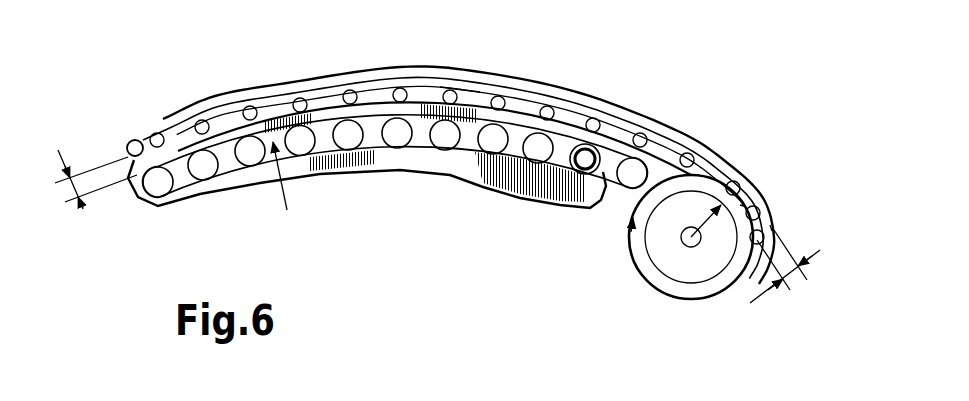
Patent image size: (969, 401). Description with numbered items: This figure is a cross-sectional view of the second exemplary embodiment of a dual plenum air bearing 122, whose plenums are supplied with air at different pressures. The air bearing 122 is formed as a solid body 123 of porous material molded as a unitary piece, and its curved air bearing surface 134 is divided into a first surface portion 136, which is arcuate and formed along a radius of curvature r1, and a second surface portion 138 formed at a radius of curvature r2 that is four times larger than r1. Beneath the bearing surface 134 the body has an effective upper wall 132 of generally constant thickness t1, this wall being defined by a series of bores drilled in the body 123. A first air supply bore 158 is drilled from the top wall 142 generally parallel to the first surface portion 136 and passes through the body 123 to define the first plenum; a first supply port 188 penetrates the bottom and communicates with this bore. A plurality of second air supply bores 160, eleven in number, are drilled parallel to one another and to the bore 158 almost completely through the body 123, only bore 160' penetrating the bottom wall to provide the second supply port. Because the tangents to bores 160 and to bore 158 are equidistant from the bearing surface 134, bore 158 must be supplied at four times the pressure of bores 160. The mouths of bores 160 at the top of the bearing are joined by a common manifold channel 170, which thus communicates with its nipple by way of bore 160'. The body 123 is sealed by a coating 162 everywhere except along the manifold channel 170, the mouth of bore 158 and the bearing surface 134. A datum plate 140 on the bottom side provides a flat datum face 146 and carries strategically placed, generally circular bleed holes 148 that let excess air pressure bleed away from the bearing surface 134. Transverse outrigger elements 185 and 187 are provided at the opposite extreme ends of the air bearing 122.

The air bearing 122 is at (736, 84).
The body 123 is at (493, 187).
The upper wall 132 is at (540, 110).
The air bearing surface 134 is at (510, 123).
The first surface portion 136 is at (752, 187).
The second surface portion 138 is at (327, 93).
The datum plate 140 is at (380, 72).
The top wall 142 is at (520, 206).
The datum face 146 is at (475, 90).
The bleed holes 148 is at (300, 100).
The first air supply bore 158 is at (681, 264).
The second air supply bores 160 is at (395, 192).
The second air supply bore 160' is at (558, 200).
The coating 162 is at (140, 192).
The manifold channel 170 is at (476, 143).
The transverse outrigger element 185 is at (777, 227).
The transverse outrigger element 187 is at (128, 150).
The first supply port 188 is at (699, 251).
The radius of curvature r1 is at (710, 230).
The radius of curvature r2 is at (289, 176).
The thickness t1 is at (430, 231).